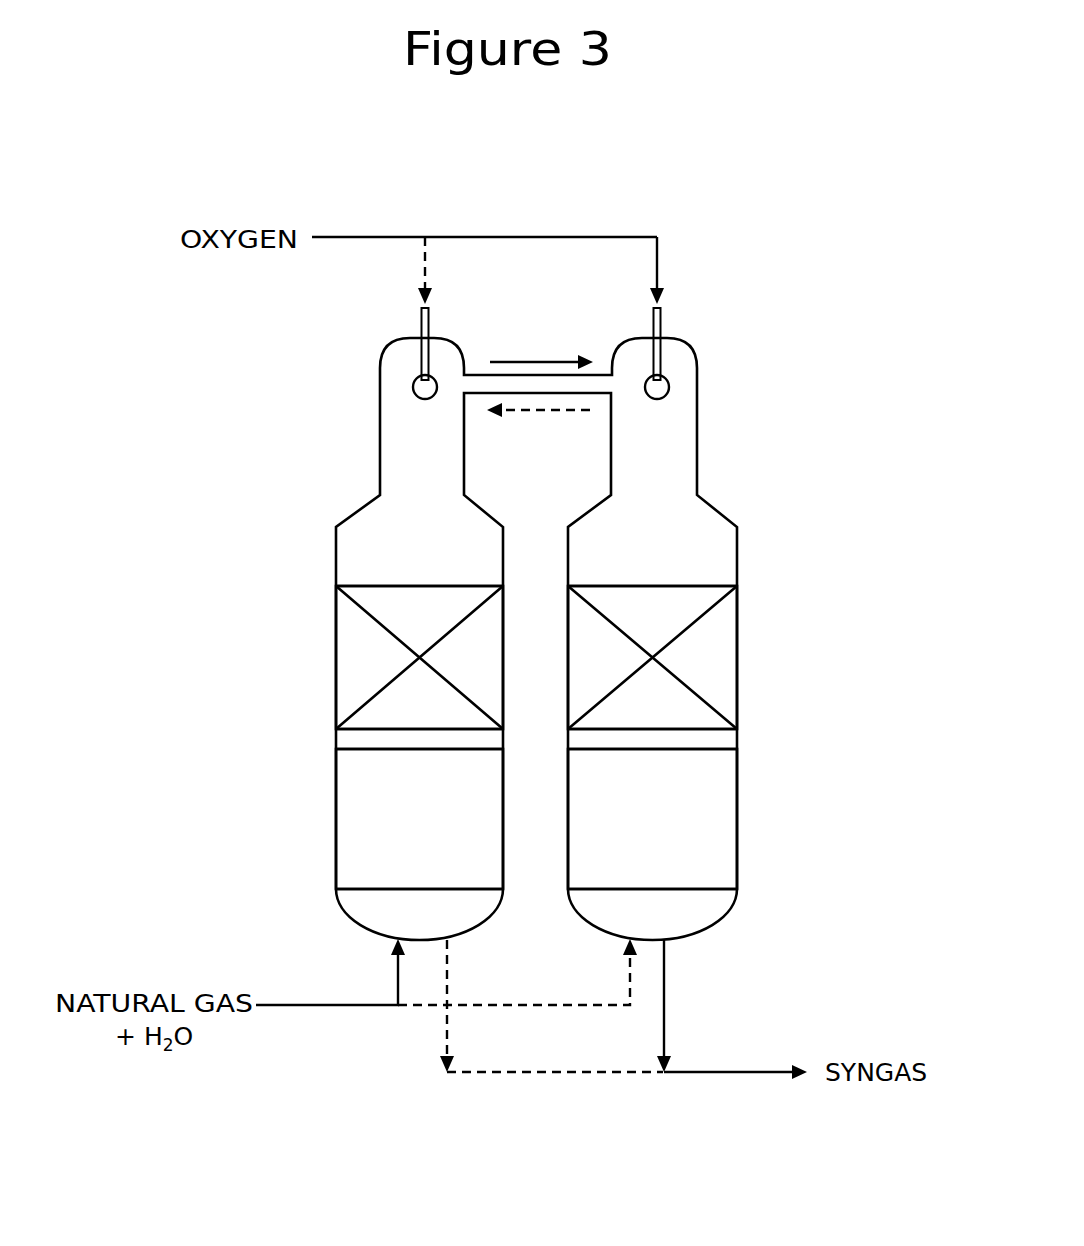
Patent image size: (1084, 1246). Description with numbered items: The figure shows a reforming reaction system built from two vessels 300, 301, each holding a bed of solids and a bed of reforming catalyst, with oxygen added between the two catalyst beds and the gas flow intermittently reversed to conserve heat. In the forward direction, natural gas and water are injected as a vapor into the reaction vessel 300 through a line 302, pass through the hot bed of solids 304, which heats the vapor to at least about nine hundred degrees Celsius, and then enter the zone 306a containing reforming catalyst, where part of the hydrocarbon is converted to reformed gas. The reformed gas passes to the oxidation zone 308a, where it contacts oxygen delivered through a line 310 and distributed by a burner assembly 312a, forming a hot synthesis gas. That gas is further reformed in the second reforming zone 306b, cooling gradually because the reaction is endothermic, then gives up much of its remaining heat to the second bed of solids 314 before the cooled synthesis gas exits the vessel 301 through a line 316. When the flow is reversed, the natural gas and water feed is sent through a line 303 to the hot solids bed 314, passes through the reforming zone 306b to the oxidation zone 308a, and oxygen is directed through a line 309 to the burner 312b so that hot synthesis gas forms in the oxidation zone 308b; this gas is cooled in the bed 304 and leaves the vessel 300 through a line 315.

The reaction vessel 300 is at (447, 624).
The vessel 301 is at (733, 598).
The line 302 is at (360, 1005).
The line 303 is at (522, 1005).
The bed of solids 304 is at (365, 810).
The zone containing reforming catalyst 306a is at (355, 656).
The second reforming zone 306b is at (713, 646).
The oxidation zone 308a is at (667, 404).
The oxidation zone 308b is at (404, 399).
The line 309 is at (425, 262).
The line 310 is at (590, 237).
The burner assembly 312a is at (663, 366).
The burner 312b is at (417, 364).
The second bed of solids 314 is at (707, 790).
The line 315 is at (558, 1072).
The line 316 is at (664, 995).